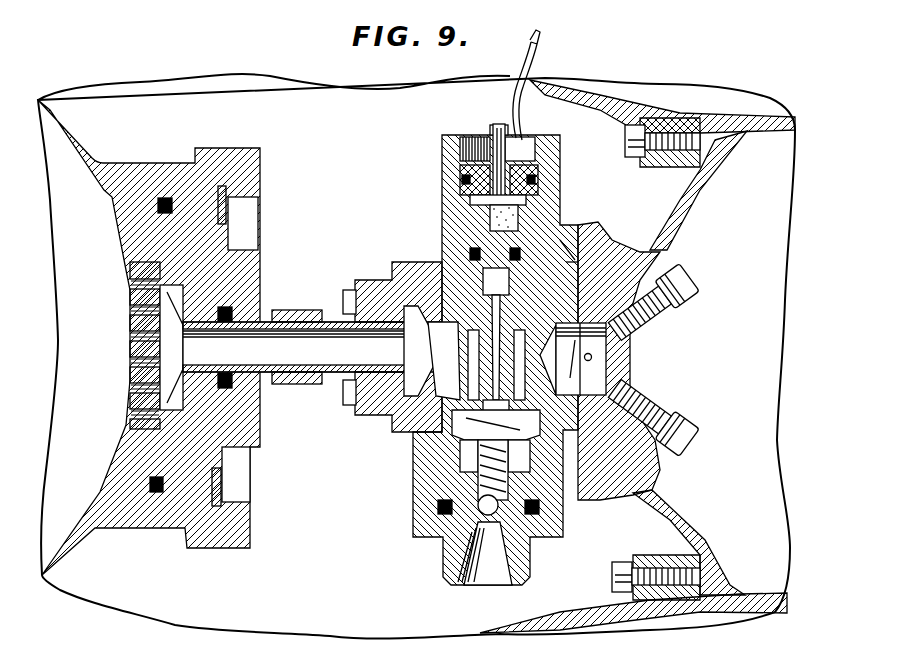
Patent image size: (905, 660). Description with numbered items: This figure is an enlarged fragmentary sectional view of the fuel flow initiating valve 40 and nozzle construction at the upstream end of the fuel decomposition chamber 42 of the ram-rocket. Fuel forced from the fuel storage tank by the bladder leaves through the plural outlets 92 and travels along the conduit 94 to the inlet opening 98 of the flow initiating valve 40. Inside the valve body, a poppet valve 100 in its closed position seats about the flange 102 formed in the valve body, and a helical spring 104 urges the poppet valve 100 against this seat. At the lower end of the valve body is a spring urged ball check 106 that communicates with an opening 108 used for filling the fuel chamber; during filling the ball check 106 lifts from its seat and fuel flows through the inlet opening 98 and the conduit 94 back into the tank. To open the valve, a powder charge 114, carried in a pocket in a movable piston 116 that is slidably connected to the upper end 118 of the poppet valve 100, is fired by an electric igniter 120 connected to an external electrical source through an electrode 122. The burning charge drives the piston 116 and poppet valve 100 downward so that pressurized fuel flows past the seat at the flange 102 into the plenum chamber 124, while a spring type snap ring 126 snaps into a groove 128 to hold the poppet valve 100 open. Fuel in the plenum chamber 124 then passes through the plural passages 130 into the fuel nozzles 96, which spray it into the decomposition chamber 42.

The fuel flow initiating valve 40 is at (458, 365).
The fuel decomposition chamber 42 is at (754, 152).
The plural outlets 92 is at (128, 372).
The conduit 94 is at (293, 321).
The fuel nozzles 96 is at (677, 305).
The inlet opening 98 is at (385, 282).
The poppet valve 100 is at (462, 447).
The flange 102 is at (562, 395).
The helical spring 104 is at (470, 470).
The spring urged ball check 106 is at (470, 582).
The opening 108 is at (510, 582).
The powder charge 114 is at (478, 208).
The movable piston 116 is at (490, 222).
The upper end 118 is at (483, 282).
The electric igniter 120 is at (493, 132).
The electrode 122 is at (524, 66).
The plenum chamber 124 is at (592, 242).
The spring type snap ring 126 is at (564, 262).
The groove 128 is at (556, 228).
The plural passages 130 is at (592, 356).